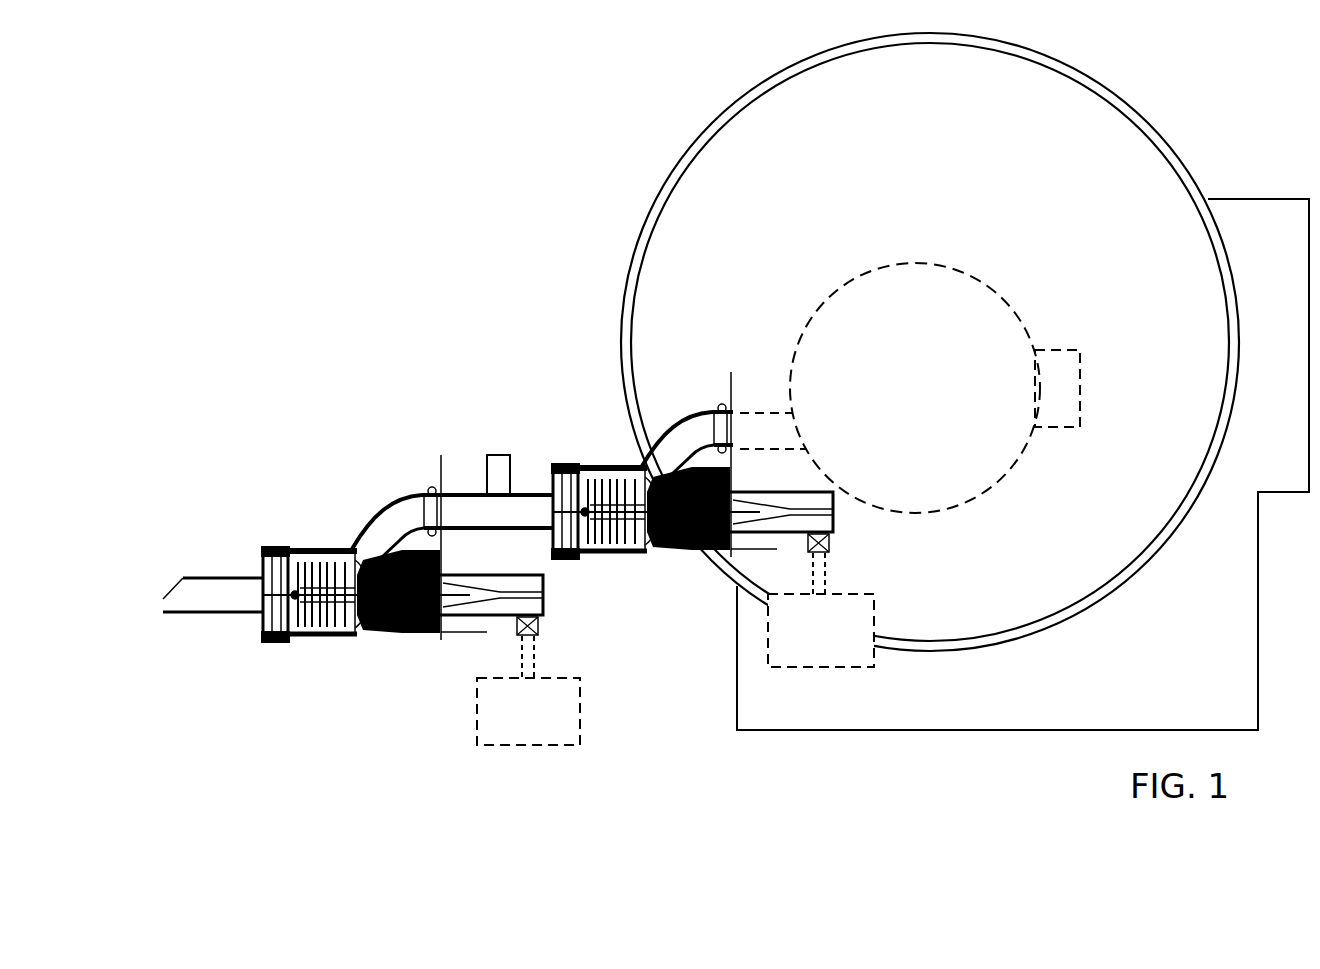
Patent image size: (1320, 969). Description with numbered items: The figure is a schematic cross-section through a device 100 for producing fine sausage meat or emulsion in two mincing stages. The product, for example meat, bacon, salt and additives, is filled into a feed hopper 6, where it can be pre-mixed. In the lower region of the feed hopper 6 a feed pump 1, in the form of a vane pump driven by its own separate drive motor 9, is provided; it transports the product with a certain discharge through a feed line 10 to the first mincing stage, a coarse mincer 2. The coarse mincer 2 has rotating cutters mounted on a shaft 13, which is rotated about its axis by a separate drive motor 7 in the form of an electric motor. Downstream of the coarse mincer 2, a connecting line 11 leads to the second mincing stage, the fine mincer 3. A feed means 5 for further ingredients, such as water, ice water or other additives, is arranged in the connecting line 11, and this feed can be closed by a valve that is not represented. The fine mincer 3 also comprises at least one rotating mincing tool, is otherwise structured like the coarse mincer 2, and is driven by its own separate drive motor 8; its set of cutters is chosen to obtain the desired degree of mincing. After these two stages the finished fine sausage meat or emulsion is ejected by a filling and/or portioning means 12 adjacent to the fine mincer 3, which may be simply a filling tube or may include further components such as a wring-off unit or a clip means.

The device 100 is at (646, 179).
The feed pump 1 is at (923, 403).
The coarse mincer 2 is at (649, 563).
The fine mincer 3 is at (357, 643).
The feed means for further ingredients 5 is at (486, 478).
The feed hopper 6 is at (1118, 598).
The drive motor 7 is at (827, 647).
The drive motor 8 is at (535, 727).
The drive motor 9 is at (1058, 349).
The feed line 10 is at (712, 407).
The connecting line 11 is at (388, 500).
The filling and/or portioning means 12 is at (213, 576).
The shaft 13 is at (320, 643).